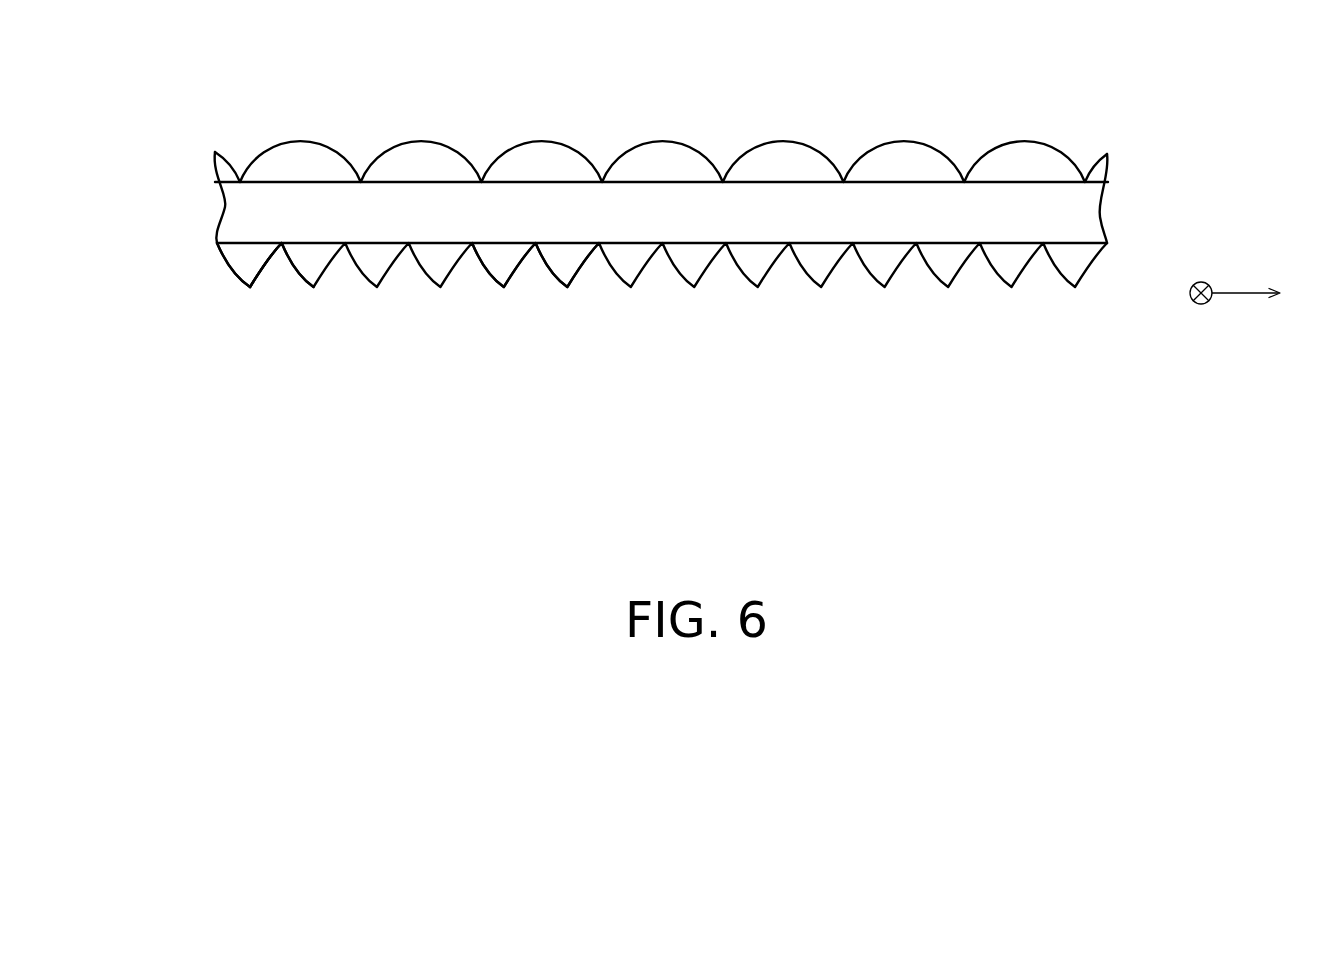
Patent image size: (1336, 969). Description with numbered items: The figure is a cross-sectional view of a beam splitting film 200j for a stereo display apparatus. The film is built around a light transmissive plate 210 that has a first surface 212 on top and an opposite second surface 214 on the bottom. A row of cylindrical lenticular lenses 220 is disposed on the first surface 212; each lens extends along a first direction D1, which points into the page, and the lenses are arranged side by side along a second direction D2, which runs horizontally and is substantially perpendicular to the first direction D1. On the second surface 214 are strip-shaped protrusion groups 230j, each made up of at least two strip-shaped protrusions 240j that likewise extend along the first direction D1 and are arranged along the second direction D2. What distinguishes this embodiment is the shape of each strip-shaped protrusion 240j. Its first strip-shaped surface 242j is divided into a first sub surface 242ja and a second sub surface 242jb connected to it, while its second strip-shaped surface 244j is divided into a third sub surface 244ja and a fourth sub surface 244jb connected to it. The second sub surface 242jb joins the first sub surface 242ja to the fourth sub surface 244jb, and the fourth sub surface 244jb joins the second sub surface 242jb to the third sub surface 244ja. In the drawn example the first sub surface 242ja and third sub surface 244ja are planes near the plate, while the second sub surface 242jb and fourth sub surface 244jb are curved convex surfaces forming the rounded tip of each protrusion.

The beam splitting film 200j is at (1203, 548).
The light transmissive plate 210 is at (1092, 213).
The first surface 212 is at (1058, 183).
The second surface 214 is at (880, 243).
The cylindrical lenticular lenses 220 is at (1007, 153).
The strip-shaped protrusion group 230j is at (600, 401).
The strip-shaped protrusion 240j is at (498, 270).
The first strip-shaped surface 242j is at (113, 247).
The first sub surface 242ja is at (223, 253).
The second sub surface 242jb is at (237, 277).
The second strip-shaped surface 244j is at (342, 364).
The third sub surface 244ja is at (283, 257).
The fourth sub surface 244jb is at (274, 279).
The first direction D1 is at (1201, 304).
The second direction D2 is at (1265, 295).